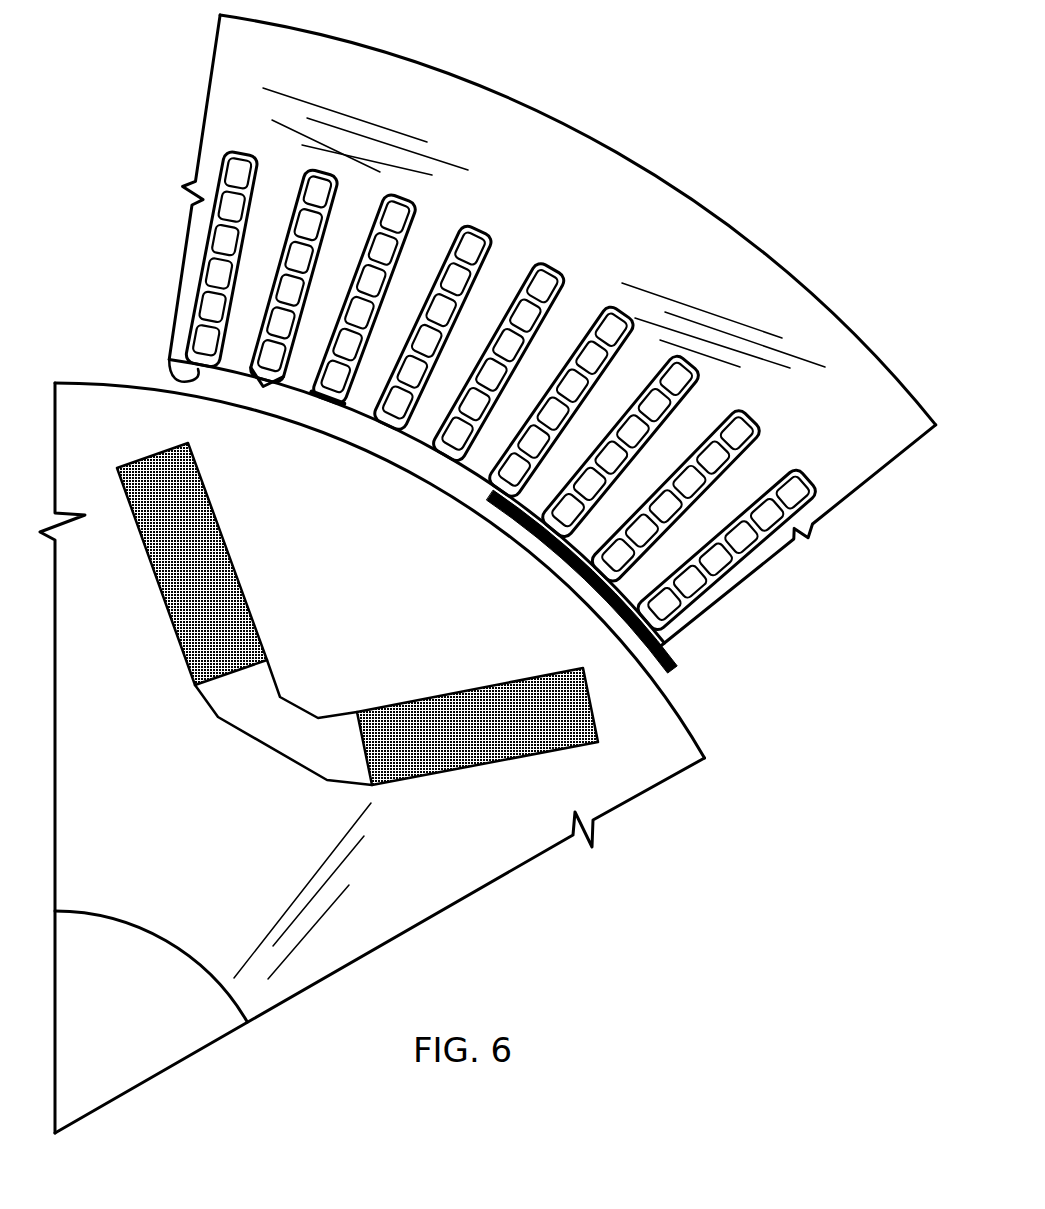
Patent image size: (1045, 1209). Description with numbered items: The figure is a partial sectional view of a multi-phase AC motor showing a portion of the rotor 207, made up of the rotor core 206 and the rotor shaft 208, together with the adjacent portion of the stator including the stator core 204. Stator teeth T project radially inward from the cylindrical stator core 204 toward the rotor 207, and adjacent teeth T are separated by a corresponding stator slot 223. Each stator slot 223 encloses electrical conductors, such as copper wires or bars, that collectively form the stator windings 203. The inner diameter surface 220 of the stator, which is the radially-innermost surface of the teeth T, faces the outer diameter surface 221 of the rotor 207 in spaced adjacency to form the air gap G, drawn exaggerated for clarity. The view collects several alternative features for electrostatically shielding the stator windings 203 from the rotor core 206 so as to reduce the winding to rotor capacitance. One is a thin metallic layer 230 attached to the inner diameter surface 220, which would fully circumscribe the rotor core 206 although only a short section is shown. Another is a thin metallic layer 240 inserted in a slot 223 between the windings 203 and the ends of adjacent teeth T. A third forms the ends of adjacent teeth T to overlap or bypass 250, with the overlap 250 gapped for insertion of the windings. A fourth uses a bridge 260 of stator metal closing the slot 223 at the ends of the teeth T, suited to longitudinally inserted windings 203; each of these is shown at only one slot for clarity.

The stator windings 203 is at (317, 193).
The stator core 204 is at (581, 213).
The rotor core 206 is at (384, 594).
The rotor 207 is at (597, 907).
The rotor shaft 208 is at (134, 1014).
The inner diameter surface 220 is at (176, 352).
The outer diameter surface 221 is at (680, 709).
The stator slot 223 is at (368, 240).
The thin metallic layer 230 is at (678, 658).
The thin metallic layer 240 is at (328, 399).
The overlap 250 is at (260, 385).
The bridge 260 is at (190, 381).
The air gap G is at (657, 671).
The stator teeth T is at (250, 353).